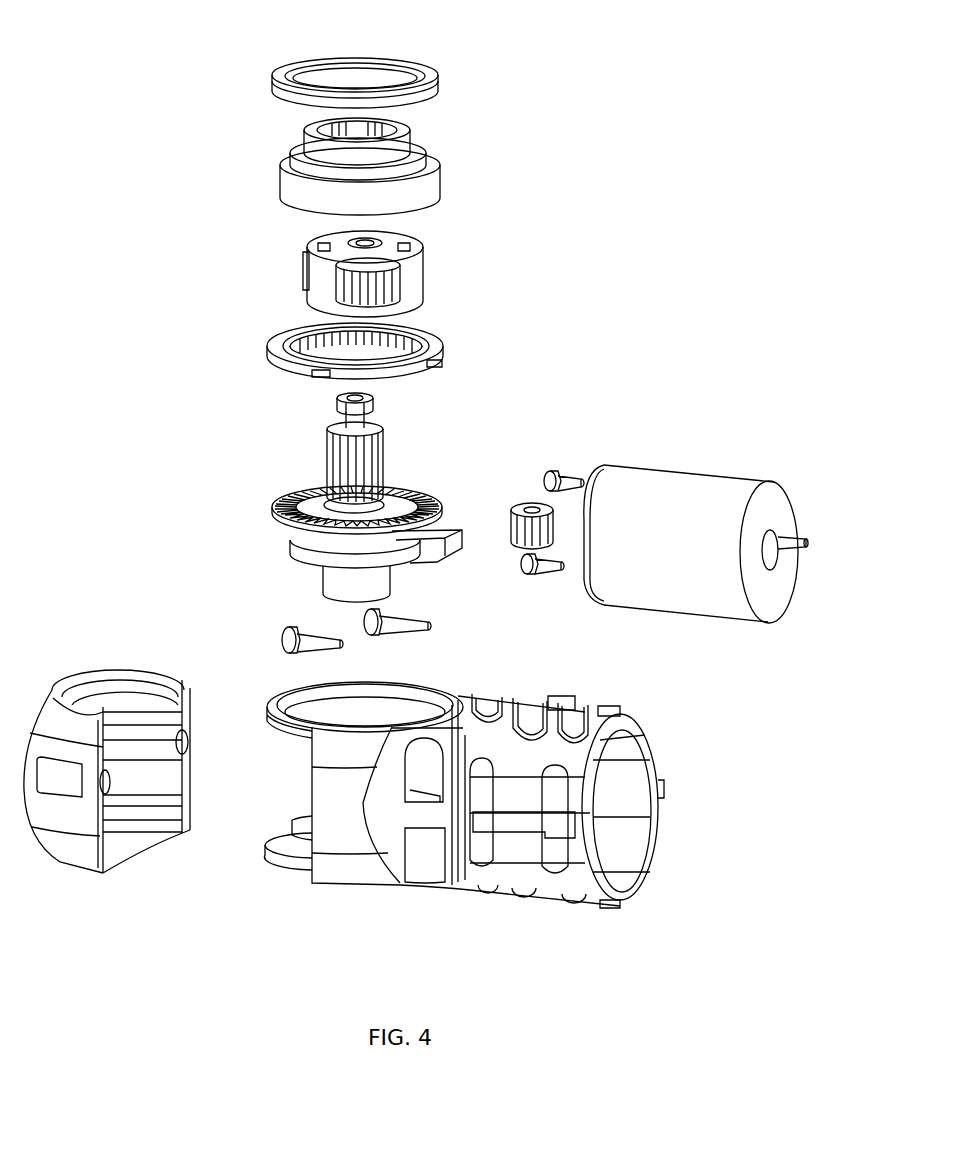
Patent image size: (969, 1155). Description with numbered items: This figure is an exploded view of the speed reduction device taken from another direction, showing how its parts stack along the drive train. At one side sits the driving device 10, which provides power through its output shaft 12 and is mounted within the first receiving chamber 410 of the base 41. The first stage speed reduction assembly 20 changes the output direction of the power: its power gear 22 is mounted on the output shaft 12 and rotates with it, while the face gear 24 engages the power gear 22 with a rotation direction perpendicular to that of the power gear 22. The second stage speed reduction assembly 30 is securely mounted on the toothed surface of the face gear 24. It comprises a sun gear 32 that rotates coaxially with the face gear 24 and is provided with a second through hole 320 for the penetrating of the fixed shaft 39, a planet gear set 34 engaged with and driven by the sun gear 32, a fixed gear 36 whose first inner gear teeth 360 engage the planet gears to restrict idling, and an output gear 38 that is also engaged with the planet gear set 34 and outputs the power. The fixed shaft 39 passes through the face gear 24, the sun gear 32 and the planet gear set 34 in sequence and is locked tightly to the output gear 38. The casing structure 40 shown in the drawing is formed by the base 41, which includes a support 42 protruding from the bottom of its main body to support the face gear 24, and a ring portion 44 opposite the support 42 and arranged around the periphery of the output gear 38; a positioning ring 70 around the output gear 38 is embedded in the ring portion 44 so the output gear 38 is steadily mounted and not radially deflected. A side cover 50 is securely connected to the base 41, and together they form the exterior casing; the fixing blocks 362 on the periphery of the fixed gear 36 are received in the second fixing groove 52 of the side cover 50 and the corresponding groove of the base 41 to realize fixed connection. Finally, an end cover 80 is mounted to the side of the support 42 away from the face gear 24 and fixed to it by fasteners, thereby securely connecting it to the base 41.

The driving device 10 is at (658, 560).
The output shaft 12 is at (575, 478).
The first stage speed reduction assembly 20 is at (491, 477).
The power gear 22 is at (525, 492).
The face gear 24 is at (420, 490).
The second stage speed reduction assembly 30 is at (210, 197).
The sun gear 32 is at (350, 463).
The second through hole 320 is at (370, 432).
The planet gear set 34 is at (292, 266).
The fixed gear 36 is at (388, 350).
The first inner gear teeth 360 is at (284, 342).
The fixing blocks 362 is at (443, 363).
The output gear 38 is at (308, 200).
The fixed shaft 39 is at (345, 415).
The housing 40 is at (490, 814).
The base 41 is at (523, 740).
The first receiving chamber 410 is at (603, 835).
The support 42 is at (288, 852).
The ring portion 44 is at (363, 683).
The side cover 50 is at (128, 741).
The second fixing groove 52 is at (178, 722).
The positioning ring 70 is at (440, 71).
The end cover 80 is at (295, 558).